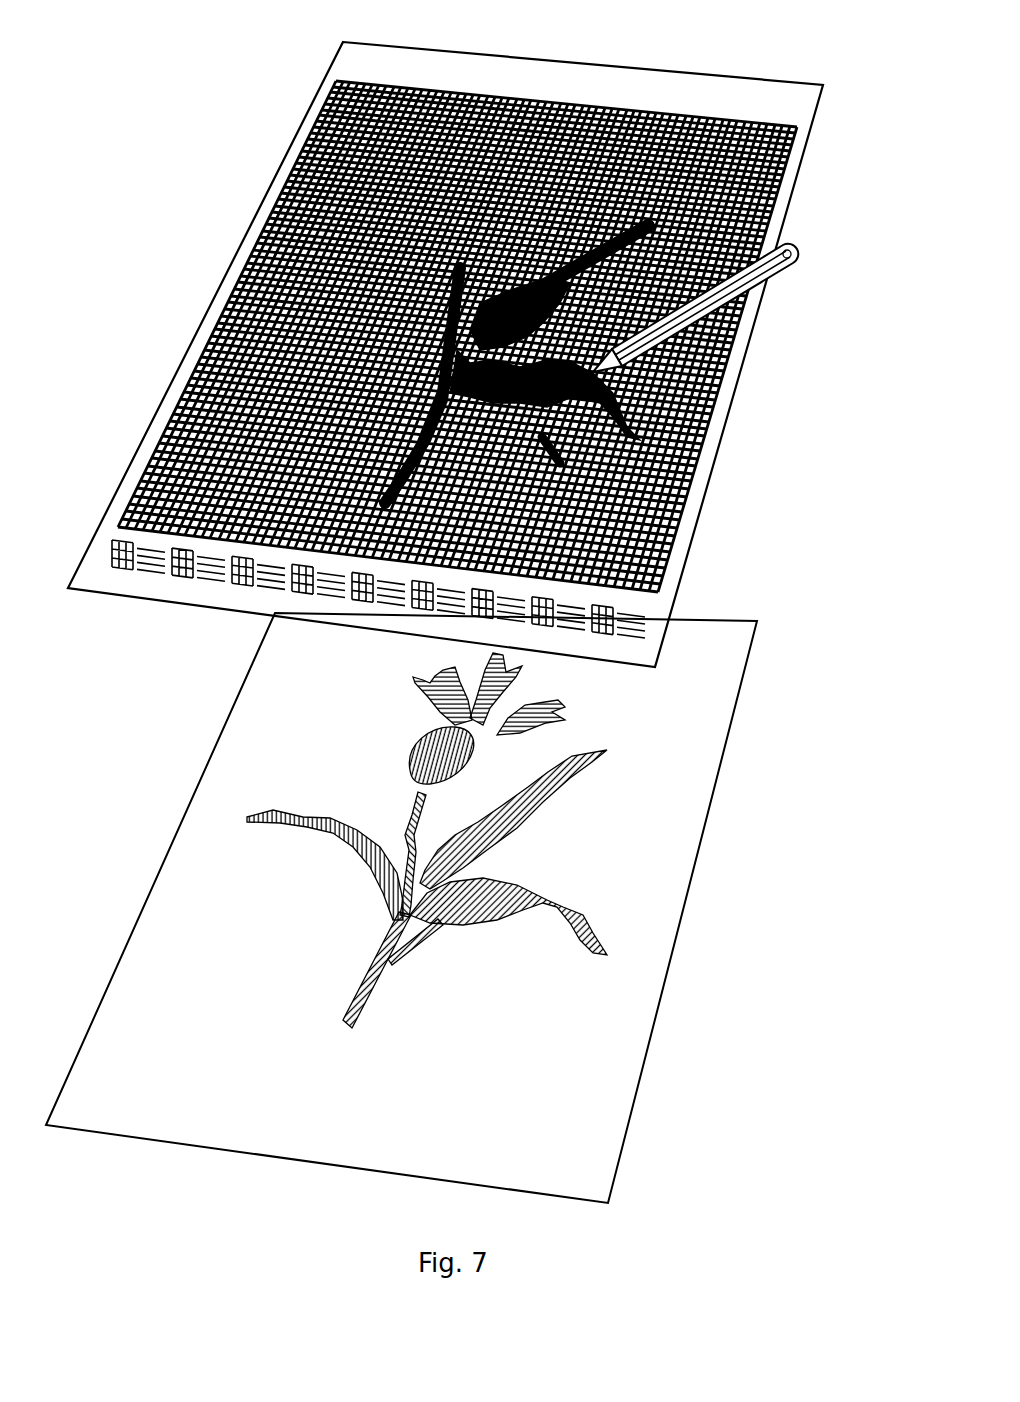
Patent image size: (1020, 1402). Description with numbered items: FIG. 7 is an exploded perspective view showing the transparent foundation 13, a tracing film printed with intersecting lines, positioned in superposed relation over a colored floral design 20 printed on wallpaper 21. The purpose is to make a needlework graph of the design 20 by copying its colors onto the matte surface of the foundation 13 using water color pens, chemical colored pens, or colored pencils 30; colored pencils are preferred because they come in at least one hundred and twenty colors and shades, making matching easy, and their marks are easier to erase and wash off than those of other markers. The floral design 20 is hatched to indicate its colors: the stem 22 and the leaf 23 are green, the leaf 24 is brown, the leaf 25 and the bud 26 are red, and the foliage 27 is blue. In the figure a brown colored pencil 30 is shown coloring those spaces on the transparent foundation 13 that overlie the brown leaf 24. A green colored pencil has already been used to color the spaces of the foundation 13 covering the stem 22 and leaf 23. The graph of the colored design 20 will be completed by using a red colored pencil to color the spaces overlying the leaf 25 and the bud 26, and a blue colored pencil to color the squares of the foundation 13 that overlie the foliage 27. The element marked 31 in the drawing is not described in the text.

The transparent foundation 13 is at (182, 380).
The floral design 20 is at (372, 891).
The wallpaper 21 is at (168, 875).
The stem 22 is at (392, 463).
The leaf 23 is at (660, 198).
The leaf 24 is at (642, 431).
The leaf 25 is at (348, 845).
The bud 26 is at (428, 747).
The foliage 27 is at (422, 700).
The colored pencil 30 is at (796, 264).
The leaf 31 is at (550, 447).